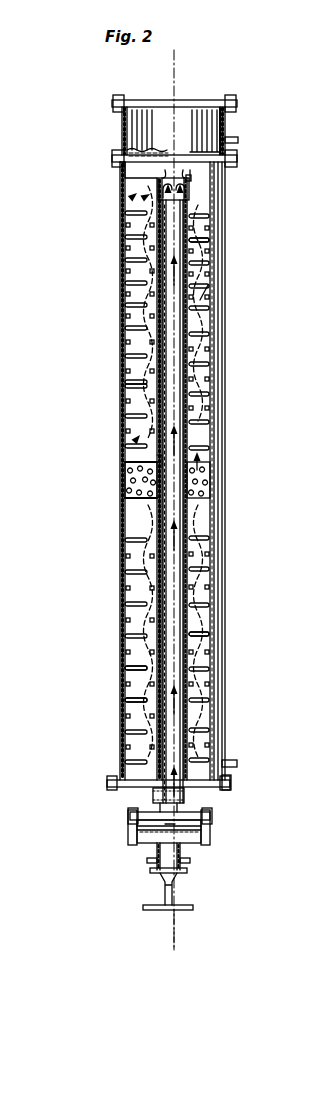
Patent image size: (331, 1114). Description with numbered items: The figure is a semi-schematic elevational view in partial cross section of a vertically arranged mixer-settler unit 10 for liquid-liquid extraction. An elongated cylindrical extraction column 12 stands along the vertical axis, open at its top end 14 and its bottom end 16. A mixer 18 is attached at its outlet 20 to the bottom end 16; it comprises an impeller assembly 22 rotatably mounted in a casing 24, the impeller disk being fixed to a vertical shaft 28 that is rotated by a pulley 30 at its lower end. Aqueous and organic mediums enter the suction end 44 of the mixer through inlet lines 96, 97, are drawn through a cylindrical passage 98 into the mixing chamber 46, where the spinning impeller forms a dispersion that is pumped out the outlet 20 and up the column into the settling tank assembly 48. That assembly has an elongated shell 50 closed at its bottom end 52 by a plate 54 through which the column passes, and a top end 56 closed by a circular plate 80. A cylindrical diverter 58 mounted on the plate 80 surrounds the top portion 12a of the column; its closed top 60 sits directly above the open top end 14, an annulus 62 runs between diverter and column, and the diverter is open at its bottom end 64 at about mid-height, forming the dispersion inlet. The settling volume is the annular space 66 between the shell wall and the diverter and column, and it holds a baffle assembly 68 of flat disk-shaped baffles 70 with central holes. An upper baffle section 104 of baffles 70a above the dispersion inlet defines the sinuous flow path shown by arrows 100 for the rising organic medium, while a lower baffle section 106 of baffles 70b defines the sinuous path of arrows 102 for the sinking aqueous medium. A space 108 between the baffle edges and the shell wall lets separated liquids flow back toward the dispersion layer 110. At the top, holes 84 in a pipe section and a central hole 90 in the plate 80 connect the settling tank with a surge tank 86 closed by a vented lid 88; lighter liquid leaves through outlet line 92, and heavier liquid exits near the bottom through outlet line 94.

The mixer-settler unit 10 is at (116, 410).
The extraction column 12 is at (190, 527).
The top portion of the extraction column 12a is at (190, 370).
The open top end 14 is at (198, 214).
The bottom end 16 is at (212, 808).
The mixer 18 is at (140, 840).
The outlet 20 is at (152, 808).
The impeller assembly 22 is at (196, 838).
The casing 24 is at (212, 822).
The vertical shaft 28 is at (158, 903).
The pulley 30 is at (192, 912).
The suction end 44 is at (158, 856).
The mixing chamber 46 is at (118, 836).
The settling tank assembly 48 is at (114, 485).
The shell 50 is at (115, 289).
The bottom end of the shell 52 is at (110, 783).
The plate 54 is at (229, 782).
The top end of the shell 56 is at (216, 190).
The diverter 58 is at (210, 262).
The closed top of the diverter 60 is at (200, 188).
The annulus 62 is at (153, 344).
The bottom end of the diverter 64 is at (203, 483).
The annular space 66 is at (148, 199).
The baffle assembly 68 is at (140, 323).
The baffles 70 is at (136, 571).
The upper baffles 70a is at (134, 381).
The lower baffles 70b is at (132, 670).
The circular plate 80 is at (136, 155).
The holes 84 is at (127, 191).
The surge tank 86 is at (234, 116).
The lid 88 is at (197, 100).
The hole 90 is at (162, 152).
The outlet line 92 is at (238, 140).
The outlet line 94 is at (233, 761).
The inlet line 96 is at (184, 872).
The inlet line 97 is at (161, 876).
The cylindrical passage 98 is at (187, 860).
The arrows 100 is at (128, 244).
The arrows 102 is at (150, 524).
The upper baffle section 104 is at (208, 292).
The lower baffle section 106 is at (134, 692).
The space 108 is at (138, 262).
The dispersion layer 110 is at (114, 465).